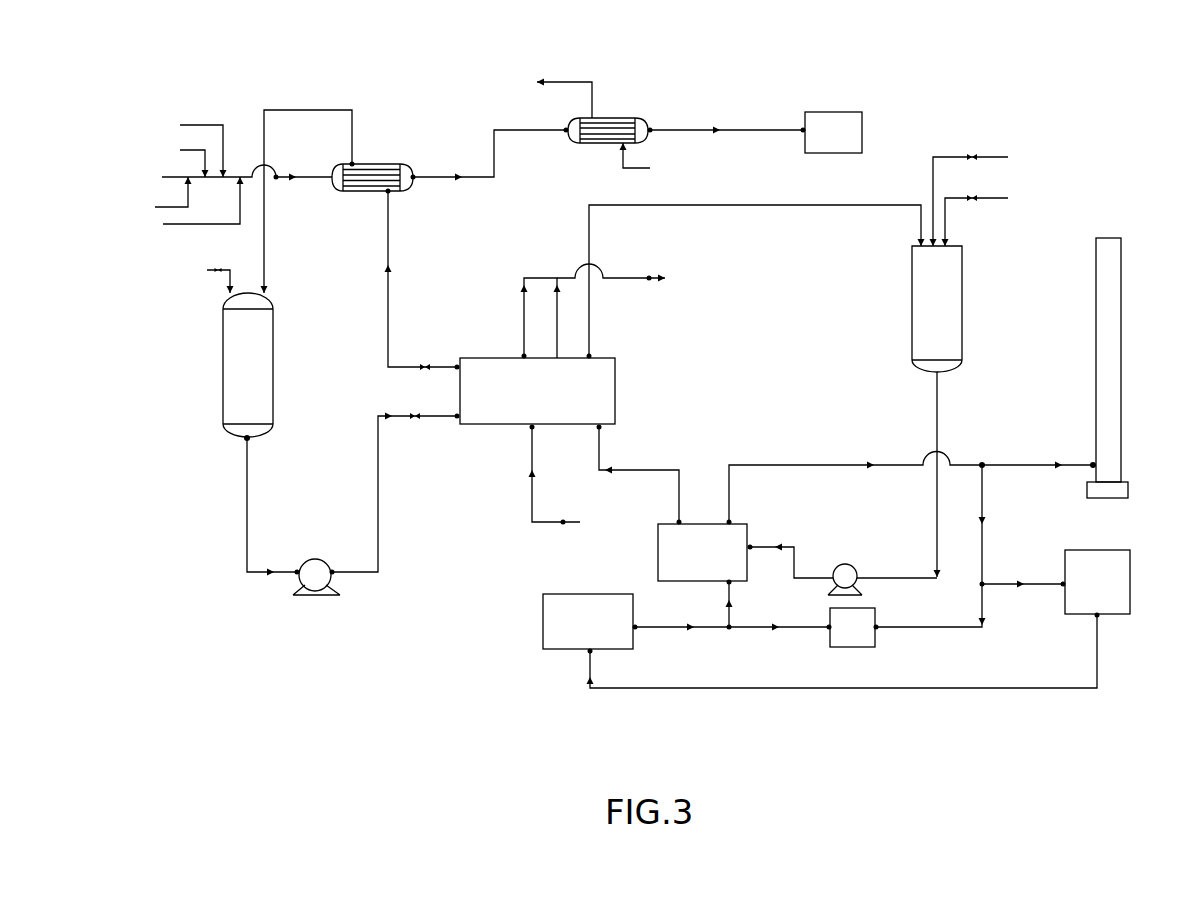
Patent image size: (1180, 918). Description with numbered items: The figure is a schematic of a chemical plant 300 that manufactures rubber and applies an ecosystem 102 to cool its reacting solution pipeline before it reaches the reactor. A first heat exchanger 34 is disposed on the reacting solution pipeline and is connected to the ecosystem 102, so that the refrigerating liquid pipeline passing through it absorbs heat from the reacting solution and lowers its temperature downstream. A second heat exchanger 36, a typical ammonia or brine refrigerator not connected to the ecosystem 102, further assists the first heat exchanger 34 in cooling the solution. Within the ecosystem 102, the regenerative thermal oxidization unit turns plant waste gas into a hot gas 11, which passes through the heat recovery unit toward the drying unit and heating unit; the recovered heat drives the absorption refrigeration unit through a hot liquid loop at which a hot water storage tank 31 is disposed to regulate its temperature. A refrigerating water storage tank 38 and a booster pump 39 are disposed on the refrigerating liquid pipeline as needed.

The chemical plant 300 is at (145, 85).
The first heat exchanger 34 is at (382, 163).
The second heat exchanger 36 is at (618, 118).
The refrigerating water storage tank 38 is at (248, 365).
The booster pump 39 is at (316, 577).
The hot water storage tank 31 is at (937, 309).
The ecosystem 102 is at (757, 433).
The hot gas 11 is at (681, 619).